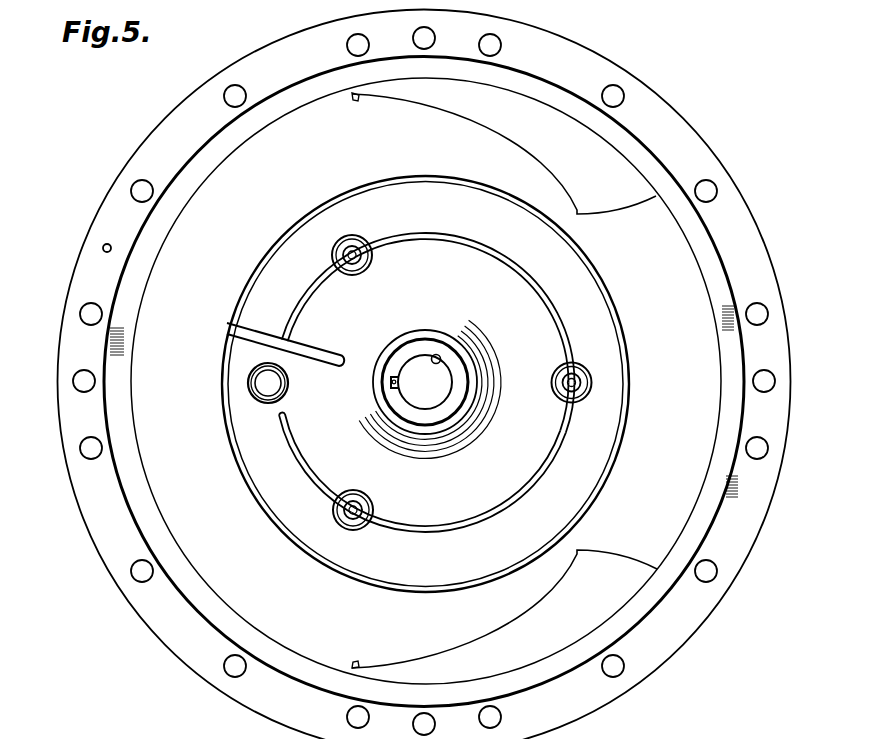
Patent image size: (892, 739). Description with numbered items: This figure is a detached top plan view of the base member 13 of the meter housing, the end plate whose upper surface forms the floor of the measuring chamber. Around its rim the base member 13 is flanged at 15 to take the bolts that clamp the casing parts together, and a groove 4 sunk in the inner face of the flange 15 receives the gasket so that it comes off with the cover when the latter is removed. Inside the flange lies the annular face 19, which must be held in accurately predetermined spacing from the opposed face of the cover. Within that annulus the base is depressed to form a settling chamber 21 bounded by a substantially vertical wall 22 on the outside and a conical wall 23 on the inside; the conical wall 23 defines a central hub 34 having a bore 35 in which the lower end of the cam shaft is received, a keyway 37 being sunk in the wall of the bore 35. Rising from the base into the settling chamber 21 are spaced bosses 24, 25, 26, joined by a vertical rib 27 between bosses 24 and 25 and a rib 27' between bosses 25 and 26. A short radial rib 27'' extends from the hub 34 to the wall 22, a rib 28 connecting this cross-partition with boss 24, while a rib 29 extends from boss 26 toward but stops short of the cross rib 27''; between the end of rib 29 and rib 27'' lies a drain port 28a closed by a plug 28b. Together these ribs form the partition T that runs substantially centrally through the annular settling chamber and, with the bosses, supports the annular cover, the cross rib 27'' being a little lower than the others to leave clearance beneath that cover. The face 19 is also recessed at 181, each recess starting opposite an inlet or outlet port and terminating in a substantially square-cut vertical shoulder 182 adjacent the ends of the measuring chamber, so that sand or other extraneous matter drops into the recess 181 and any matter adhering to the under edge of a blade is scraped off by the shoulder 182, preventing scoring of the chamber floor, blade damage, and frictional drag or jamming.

The groove 4 is at (148, 222).
The base member 13 is at (128, 151).
The flange 15 is at (170, 112).
The face 19 is at (299, 126).
The settling chamber 21 is at (583, 285).
The vertical wall 22 is at (283, 238).
The conical wall 23 is at (427, 330).
The boss 24 is at (361, 247).
The boss 25 is at (580, 365).
The boss 26 is at (356, 531).
The vertical rib 27 is at (463, 299).
The rib 27' is at (458, 482).
The short radial rib 27'' is at (295, 342).
The rib 28 is at (310, 293).
The drain port 28a is at (255, 393).
The plug 28b is at (266, 382).
The rib 29 is at (305, 466).
The hub 34 is at (418, 324).
The bore 35 is at (439, 356).
The keyway 37 is at (392, 383).
The recess 181 is at (517, 113).
The vertical shoulder 182 is at (353, 96).
The partition T is at (570, 432).